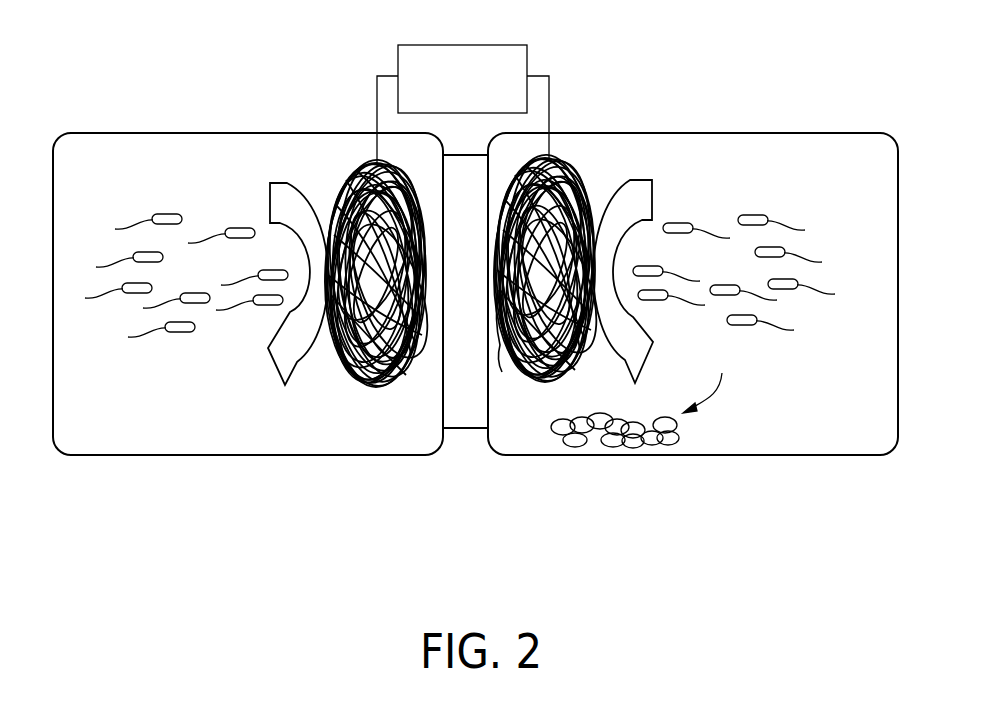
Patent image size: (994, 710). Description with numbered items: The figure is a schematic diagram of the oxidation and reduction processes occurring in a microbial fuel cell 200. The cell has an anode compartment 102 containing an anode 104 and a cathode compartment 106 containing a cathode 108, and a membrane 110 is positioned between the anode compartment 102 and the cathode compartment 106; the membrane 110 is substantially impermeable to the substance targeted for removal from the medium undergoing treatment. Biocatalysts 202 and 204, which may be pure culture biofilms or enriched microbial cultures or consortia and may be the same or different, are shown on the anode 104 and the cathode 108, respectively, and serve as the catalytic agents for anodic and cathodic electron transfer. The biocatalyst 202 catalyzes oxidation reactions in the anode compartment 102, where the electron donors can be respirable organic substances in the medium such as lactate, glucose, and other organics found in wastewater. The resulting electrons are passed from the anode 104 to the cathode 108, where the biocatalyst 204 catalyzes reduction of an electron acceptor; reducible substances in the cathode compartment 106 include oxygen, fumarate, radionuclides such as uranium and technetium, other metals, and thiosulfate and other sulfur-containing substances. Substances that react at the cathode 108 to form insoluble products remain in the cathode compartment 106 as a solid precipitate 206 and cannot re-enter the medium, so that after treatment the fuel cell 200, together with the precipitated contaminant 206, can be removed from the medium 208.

The microbial fuel cell 200 is at (260, 81).
The anode compartment 102 is at (84, 133).
The anode 104 is at (350, 388).
The cathode compartment 106 is at (826, 133).
The cathode 108 is at (547, 383).
The membrane 110 is at (473, 428).
The biocatalyst 202 is at (140, 297).
The biocatalyst 204 is at (590, 362).
The solid precipitate 206 is at (600, 438).
The medium 208 is at (833, 423).